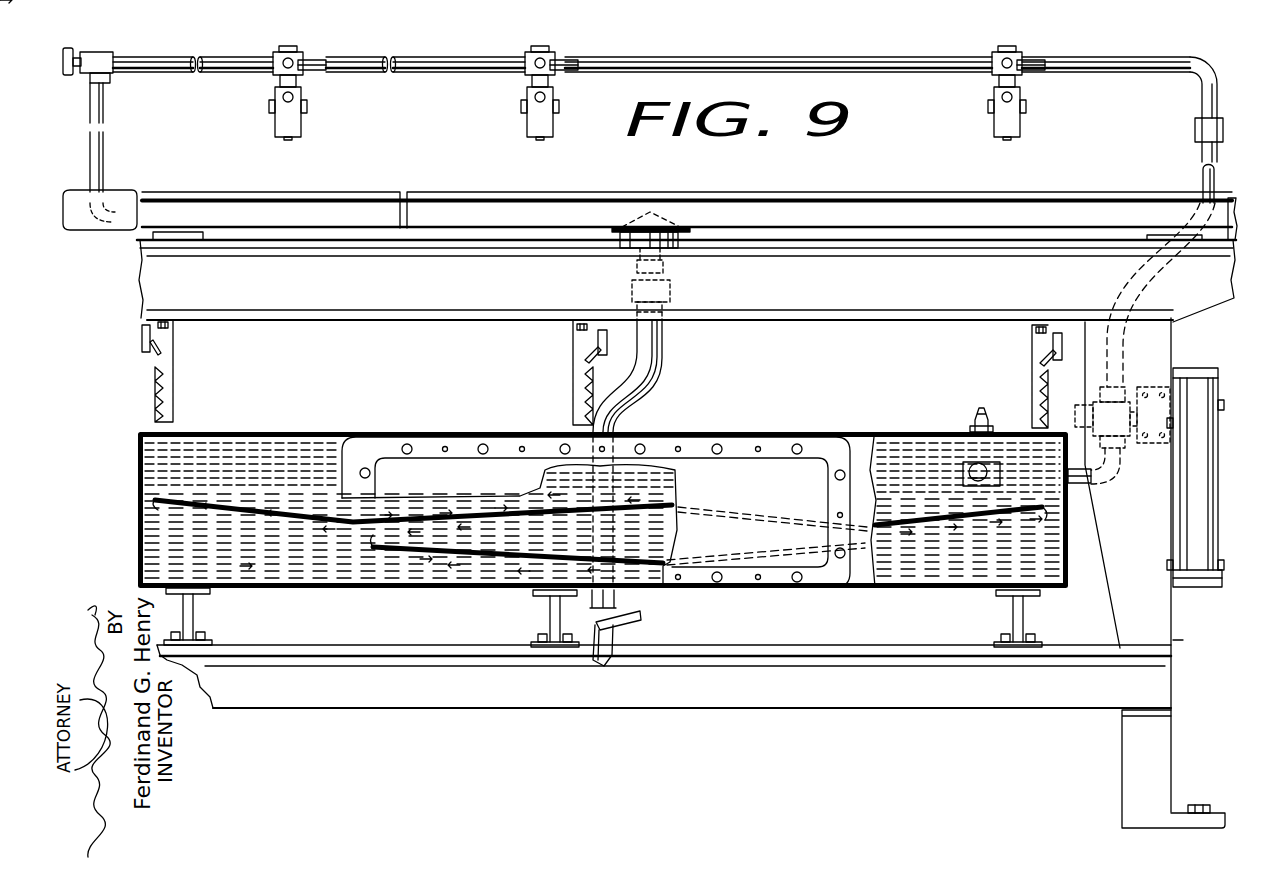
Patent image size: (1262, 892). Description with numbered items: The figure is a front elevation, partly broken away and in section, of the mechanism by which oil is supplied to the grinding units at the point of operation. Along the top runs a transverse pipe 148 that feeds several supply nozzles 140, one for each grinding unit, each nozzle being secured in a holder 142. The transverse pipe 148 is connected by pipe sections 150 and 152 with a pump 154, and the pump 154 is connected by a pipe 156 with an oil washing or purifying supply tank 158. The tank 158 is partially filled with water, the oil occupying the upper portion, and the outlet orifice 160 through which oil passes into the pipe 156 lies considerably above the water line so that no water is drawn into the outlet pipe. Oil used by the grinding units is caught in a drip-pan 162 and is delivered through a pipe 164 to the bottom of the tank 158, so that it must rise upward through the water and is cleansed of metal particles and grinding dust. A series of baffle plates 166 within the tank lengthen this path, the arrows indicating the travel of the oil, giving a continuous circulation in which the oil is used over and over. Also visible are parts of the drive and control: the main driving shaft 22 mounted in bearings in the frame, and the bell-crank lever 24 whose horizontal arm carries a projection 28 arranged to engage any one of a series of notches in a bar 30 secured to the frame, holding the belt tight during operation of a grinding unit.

The shaft 22 is at (1217, 570).
The bell-crank lever 24 is at (141, 334).
The projection 28 is at (152, 355).
The notched bar 30 is at (173, 362).
The supply nozzle 140 is at (290, 123).
The holder 142 is at (275, 128).
The transverse pipe 148 is at (678, 62).
The pipe section 150 is at (1205, 107).
The pipe section 152 is at (1202, 172).
The pump 154 is at (1118, 403).
The pipe 156 is at (1100, 478).
The oil washing or purifying supply tank 158 is at (843, 440).
The outlet orifice 160 is at (978, 470).
The drip-pan 162 is at (500, 200).
The pipe 164 is at (658, 350).
The baffle plates 166 is at (357, 523).